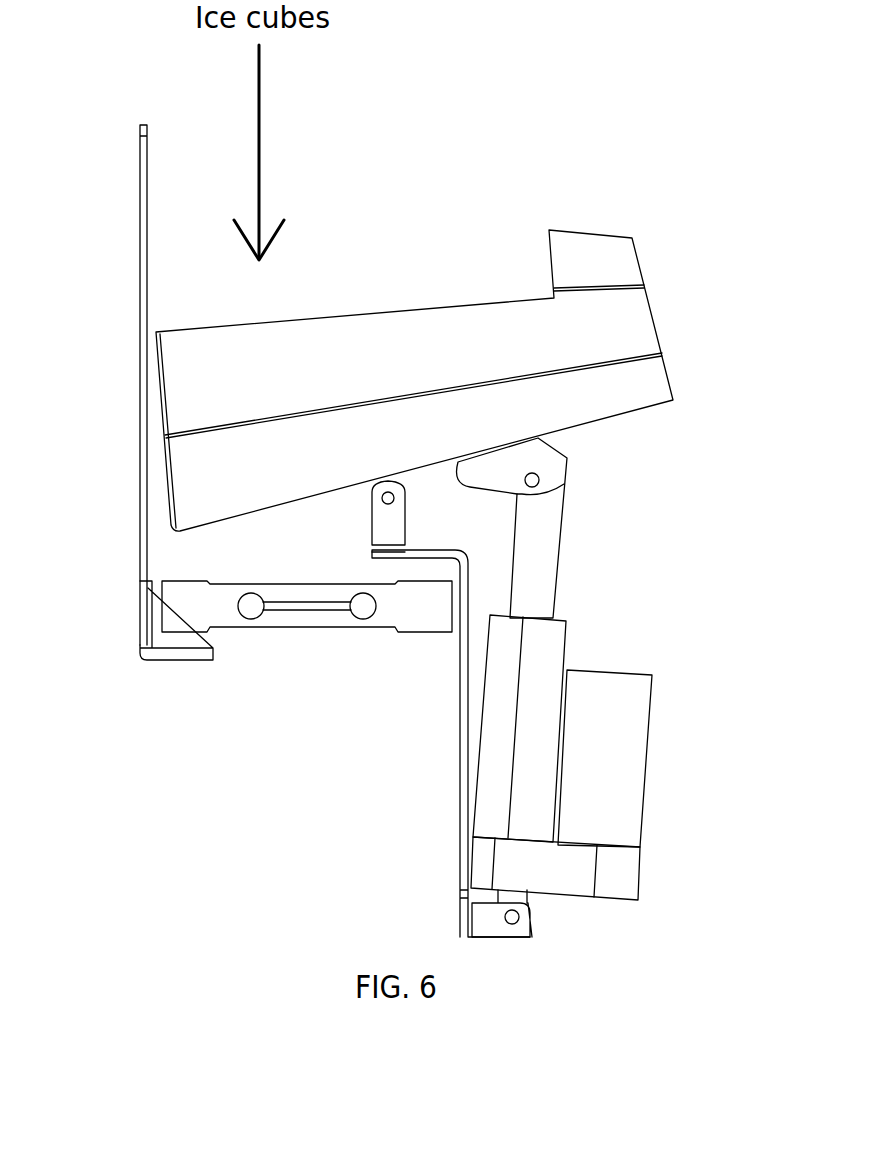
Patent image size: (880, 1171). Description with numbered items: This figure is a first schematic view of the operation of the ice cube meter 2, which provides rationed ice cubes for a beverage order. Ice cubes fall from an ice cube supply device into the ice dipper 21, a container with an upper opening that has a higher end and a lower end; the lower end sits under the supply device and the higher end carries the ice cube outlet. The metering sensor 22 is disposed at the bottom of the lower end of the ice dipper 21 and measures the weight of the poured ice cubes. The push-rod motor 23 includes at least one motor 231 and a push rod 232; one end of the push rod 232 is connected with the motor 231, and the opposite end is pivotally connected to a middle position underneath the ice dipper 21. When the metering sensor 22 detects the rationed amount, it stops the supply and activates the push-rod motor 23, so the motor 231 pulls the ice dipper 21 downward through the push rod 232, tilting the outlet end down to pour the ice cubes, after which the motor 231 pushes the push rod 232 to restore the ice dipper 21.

The ice cube meter 2 is at (593, 137).
The ice dipper 21 is at (438, 318).
The metering sensor 22 is at (193, 598).
The push-rod motor 23 is at (631, 769).
The motor 231 is at (497, 743).
The push rod 232 is at (548, 524).